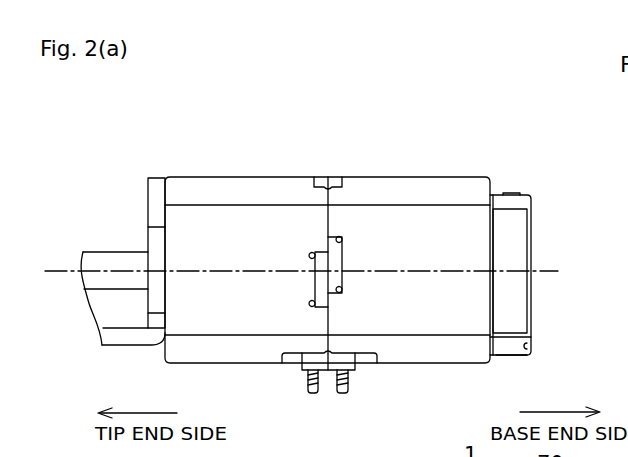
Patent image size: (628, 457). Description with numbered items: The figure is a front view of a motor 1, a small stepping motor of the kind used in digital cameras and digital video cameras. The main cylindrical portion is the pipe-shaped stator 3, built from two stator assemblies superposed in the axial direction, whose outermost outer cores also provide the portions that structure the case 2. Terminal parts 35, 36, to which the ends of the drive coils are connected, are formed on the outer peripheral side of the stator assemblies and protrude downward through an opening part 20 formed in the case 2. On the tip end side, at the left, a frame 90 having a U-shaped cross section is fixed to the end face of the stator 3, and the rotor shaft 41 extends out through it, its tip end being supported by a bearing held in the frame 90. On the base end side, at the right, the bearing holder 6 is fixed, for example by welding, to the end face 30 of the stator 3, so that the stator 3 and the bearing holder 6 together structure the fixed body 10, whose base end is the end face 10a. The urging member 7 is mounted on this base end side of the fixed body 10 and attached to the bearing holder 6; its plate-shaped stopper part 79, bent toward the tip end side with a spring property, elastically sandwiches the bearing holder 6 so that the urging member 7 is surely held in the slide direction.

The motor 1 is at (340, 256).
The fixed body 10 is at (374, 241).
The case 2 is at (319, 242).
The stator 3 is at (432, 192).
The bearing holder 6 is at (535, 241).
The urging member 7 is at (520, 242).
The stopper part 79 is at (520, 192).
The end face 30 is at (492, 345).
The end face 10a is at (530, 353).
The opening part 20 is at (362, 361).
The terminal part 35 is at (313, 394).
The terminal part 36 is at (342, 394).
The rotor shaft 41 is at (117, 260).
The frame 90 is at (123, 338).